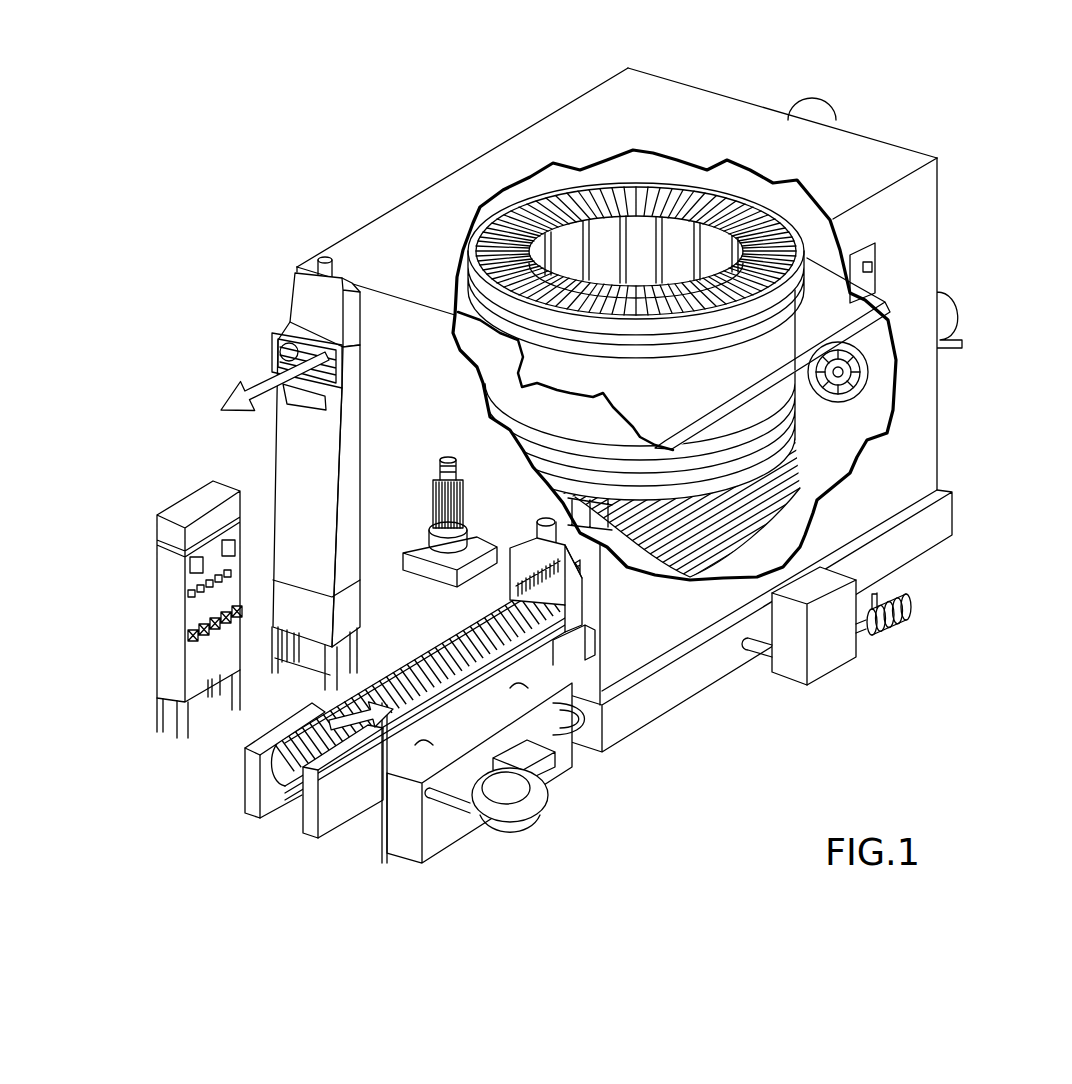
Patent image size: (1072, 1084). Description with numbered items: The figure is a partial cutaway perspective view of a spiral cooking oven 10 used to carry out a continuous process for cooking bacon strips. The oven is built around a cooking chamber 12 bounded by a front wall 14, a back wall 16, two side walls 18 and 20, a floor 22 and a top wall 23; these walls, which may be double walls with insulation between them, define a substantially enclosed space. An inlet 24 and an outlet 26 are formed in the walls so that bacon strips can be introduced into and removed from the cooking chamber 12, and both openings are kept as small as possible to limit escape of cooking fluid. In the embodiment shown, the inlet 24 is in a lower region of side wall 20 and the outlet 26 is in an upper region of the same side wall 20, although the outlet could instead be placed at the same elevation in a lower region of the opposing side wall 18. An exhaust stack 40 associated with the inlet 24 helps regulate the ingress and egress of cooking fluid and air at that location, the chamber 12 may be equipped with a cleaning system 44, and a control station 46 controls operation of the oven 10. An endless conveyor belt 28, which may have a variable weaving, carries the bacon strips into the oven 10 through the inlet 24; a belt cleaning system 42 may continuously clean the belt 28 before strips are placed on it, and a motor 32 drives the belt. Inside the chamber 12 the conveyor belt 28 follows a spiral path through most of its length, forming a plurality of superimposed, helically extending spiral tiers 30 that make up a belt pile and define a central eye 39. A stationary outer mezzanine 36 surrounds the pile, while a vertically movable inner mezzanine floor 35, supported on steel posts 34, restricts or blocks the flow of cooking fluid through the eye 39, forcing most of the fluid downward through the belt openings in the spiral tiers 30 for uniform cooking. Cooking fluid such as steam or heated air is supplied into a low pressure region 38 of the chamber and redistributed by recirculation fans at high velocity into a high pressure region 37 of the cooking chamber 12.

The spiral cooking oven 10 is at (398, 172).
The cooking chamber 12 is at (540, 177).
The front wall 14 is at (918, 230).
The back wall 16 is at (553, 102).
The side wall 18 is at (882, 140).
The side wall 20 is at (423, 404).
The floor 22 is at (815, 480).
The top wall 23 is at (745, 115).
The inlet 24 is at (600, 614).
The outlet 26 is at (275, 458).
The endless conveyor belt 28 is at (345, 707).
The spiral tiers 30 is at (800, 428).
The motor 32 is at (433, 497).
The steel posts 34 is at (715, 246).
The mezzanine floor 35 is at (633, 276).
The outer mezzanine 36 is at (683, 404).
The high pressure region 37 is at (860, 300).
The low pressure region 38 is at (888, 408).
The eye 39 is at (310, 296).
The exhaust stack 40 is at (527, 565).
The belt cleaning system 42 is at (573, 806).
The cleaning system 44 is at (858, 675).
The control station 46 is at (195, 530).